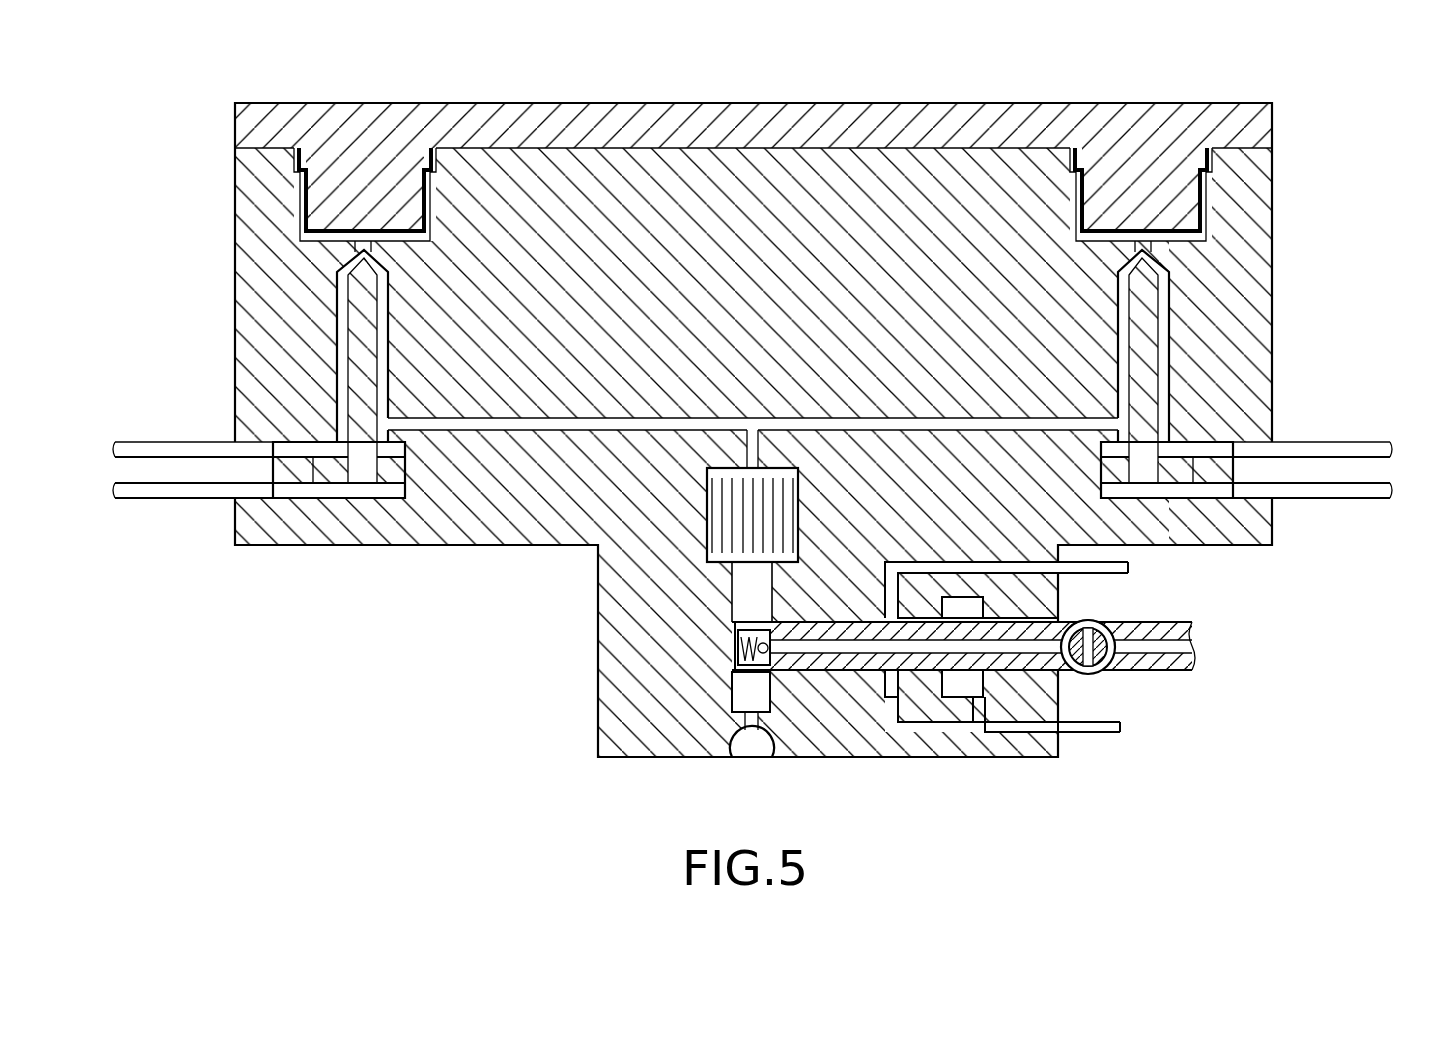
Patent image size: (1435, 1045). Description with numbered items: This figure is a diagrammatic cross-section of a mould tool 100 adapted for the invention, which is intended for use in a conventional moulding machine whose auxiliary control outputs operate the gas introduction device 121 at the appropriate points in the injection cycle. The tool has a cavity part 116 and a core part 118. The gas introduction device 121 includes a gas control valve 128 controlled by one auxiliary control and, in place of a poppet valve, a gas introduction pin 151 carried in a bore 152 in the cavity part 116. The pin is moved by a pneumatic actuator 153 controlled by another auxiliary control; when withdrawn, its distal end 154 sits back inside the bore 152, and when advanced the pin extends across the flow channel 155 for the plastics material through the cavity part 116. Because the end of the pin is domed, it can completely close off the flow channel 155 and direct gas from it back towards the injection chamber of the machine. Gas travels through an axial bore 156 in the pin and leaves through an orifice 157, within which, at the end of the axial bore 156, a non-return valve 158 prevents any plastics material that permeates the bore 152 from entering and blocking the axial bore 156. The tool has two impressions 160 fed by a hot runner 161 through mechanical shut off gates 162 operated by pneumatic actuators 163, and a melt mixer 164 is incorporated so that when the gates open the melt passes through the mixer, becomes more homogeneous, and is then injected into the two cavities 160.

The mould tool 100 is at (1285, 262).
The cavity part 116 is at (245, 380).
The core part 118 is at (1155, 148).
The gas introduction device 121 is at (1110, 687).
The gas control valve 128 is at (1090, 630).
The gas introduction pin 151 is at (786, 662).
The bore 152 is at (872, 652).
The pneumatic actuator 153 is at (962, 695).
The distal end 154 is at (737, 662).
The flow channel 155 is at (735, 570).
The axial bore 156 is at (920, 700).
The orifice 157 is at (738, 668).
The non-return valve 158 is at (738, 643).
The impressions 160 is at (300, 183).
The hot runner 161 is at (515, 420).
The mechanical shut off gates 162 is at (348, 262).
The pneumatic actuators 163 is at (352, 478).
The melt mixer 164 is at (718, 493).